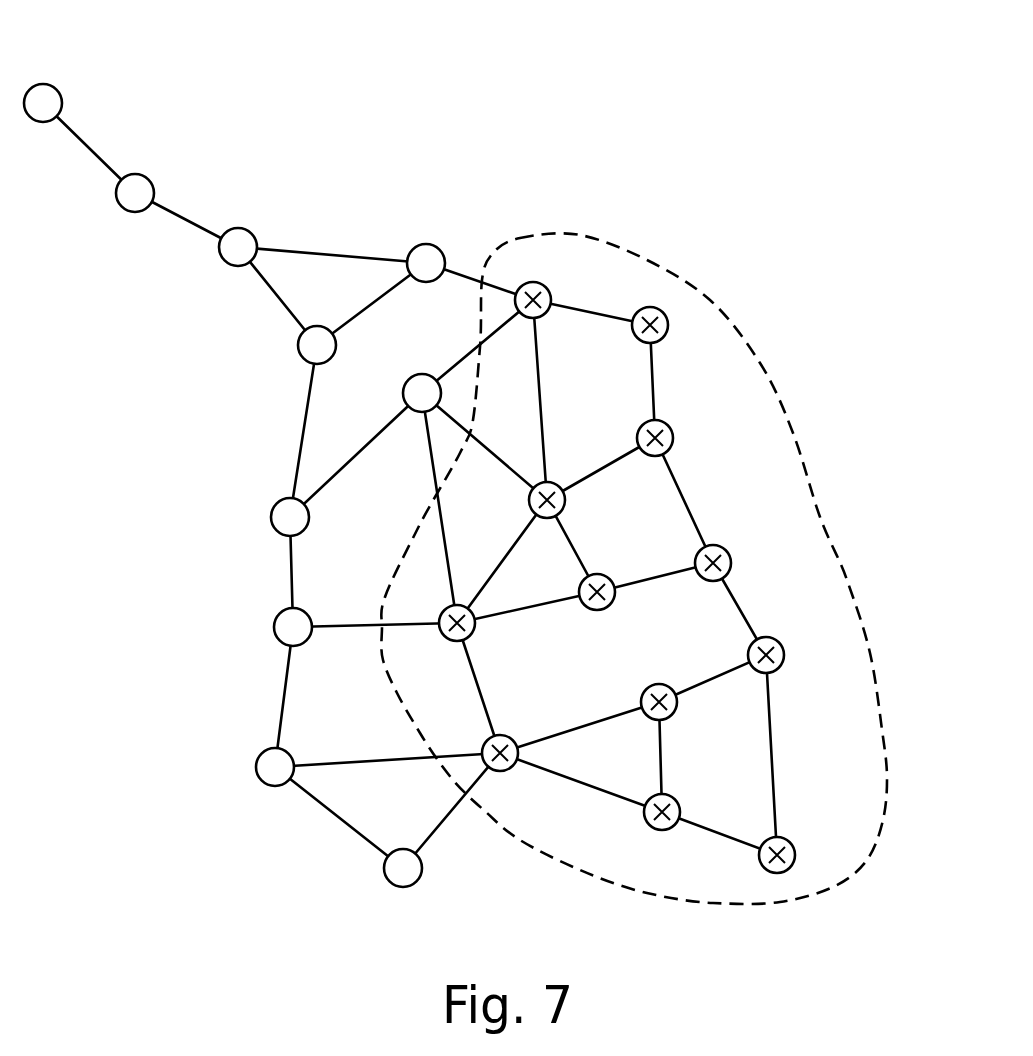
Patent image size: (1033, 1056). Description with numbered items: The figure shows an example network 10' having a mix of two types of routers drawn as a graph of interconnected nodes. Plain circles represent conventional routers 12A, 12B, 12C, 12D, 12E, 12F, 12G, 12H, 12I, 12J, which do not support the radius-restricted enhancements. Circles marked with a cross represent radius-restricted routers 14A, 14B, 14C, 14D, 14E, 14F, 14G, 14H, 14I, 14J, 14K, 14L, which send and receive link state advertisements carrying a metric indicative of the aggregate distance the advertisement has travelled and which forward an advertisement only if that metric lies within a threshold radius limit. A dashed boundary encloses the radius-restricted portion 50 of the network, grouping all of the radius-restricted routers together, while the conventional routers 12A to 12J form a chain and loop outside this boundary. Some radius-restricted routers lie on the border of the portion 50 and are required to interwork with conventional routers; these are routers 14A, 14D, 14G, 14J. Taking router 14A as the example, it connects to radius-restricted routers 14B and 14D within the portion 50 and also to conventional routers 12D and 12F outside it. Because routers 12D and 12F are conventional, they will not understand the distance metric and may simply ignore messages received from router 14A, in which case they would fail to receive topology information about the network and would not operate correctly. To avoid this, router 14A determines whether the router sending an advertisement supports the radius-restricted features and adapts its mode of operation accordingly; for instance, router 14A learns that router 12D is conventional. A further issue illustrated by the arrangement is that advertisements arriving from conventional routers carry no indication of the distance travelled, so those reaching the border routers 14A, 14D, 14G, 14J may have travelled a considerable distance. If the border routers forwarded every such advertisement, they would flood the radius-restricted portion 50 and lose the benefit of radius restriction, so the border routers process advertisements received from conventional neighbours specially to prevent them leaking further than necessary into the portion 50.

The network 10' is at (744, 73).
The conventional router 12A is at (43, 91).
The conventional router 12B is at (140, 182).
The conventional router 12C is at (242, 236).
The conventional router 12D is at (426, 252).
The conventional router 12E is at (319, 333).
The conventional router 12F is at (419, 382).
The conventional router 12G is at (273, 506).
The conventional router 12H is at (275, 619).
The conventional router 12I is at (263, 759).
The conventional router 12J is at (399, 855).
The radius-restricted router 14A is at (537, 288).
The radius-restricted router 14B is at (643, 313).
The radius-restricted router 14C is at (669, 427).
The radius-restricted router 14D is at (559, 482).
The radius-restricted router 14E is at (721, 551).
The radius-restricted router 14F is at (610, 579).
The radius-restricted router 14G is at (436, 612).
The radius-restricted router 14H is at (778, 643).
The radius-restricted router 14I is at (658, 689).
The radius-restricted router 14J is at (506, 739).
The radius-restricted router 14K is at (680, 800).
The radius-restricted router 14L is at (795, 849).
The radius-restricted portion 50 is at (709, 296).